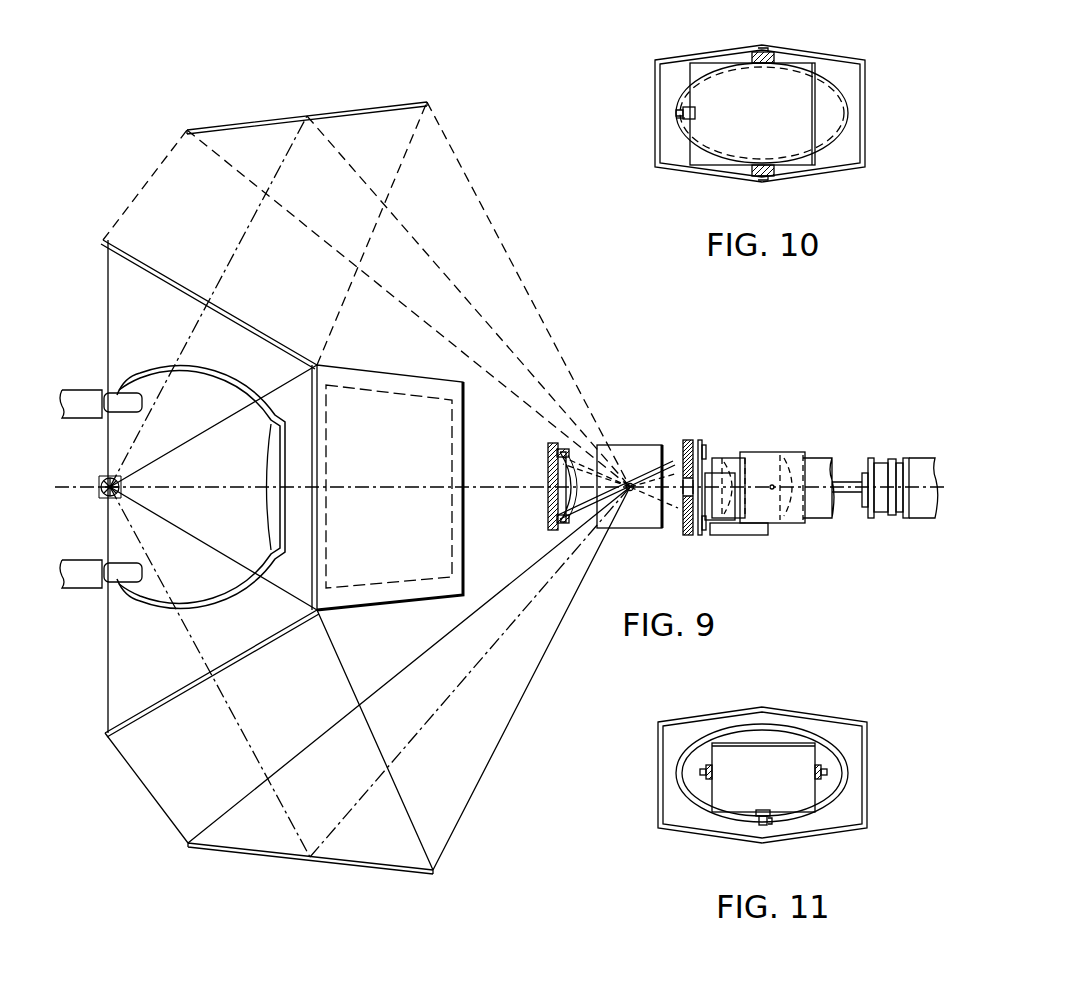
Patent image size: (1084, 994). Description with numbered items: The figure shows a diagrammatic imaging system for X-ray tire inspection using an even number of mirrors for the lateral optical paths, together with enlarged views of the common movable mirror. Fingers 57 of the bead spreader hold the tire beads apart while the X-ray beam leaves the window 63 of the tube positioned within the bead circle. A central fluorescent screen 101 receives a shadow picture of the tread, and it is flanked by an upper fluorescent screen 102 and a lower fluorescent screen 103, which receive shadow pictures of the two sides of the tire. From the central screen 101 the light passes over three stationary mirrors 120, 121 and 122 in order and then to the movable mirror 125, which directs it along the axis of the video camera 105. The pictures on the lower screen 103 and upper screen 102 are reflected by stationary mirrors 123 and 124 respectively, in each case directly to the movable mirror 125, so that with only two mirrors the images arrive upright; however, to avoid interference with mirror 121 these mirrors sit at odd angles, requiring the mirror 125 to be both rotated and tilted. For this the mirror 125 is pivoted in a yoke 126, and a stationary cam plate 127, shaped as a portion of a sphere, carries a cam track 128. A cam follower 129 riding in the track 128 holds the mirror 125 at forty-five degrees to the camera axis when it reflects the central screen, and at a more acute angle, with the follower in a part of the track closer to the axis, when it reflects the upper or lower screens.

In FIG. 9, the fingers 57 is at (118, 405).
In FIG. 9, the window 63 is at (105, 498).
In FIG. 9, the central fluorescent screen 101 is at (322, 398).
In FIG. 9, the upper fluorescent screen 102 is at (128, 250).
In FIG. 9, the lower fluorescent screen 103 is at (130, 733).
In FIG. 9, the video camera 105 is at (925, 462).
In FIG. 9, the stationary mirror 120 is at (463, 535).
In FIG. 9, the stationary mirror 121 is at (365, 590).
In FIG. 9, the stationary mirror 122 is at (640, 525).
In FIG. 9, the stationary mirror 123 is at (235, 856).
In FIG. 9, the stationary mirror 124 is at (355, 104).
In FIG. 9, the movable mirror 125 is at (630, 480).
In FIG. 10, the movable mirror 125 is at (700, 65).
In FIG. 11, the movable mirror 125 is at (790, 755).
In FIG. 10, the yoke 126 is at (772, 52).
In FIG. 11, the yoke 126 is at (708, 765).
In FIG. 9, the stationary cam plate 127 is at (548, 470).
In FIG. 10, the stationary cam plate 127 is at (850, 75).
In FIG. 11, the stationary cam plate 127 is at (848, 740).
In FIG. 10, the cam track 128 is at (678, 110).
In FIG. 11, the cam track 128 is at (733, 822).
In FIG. 9, the cam follower 129 is at (563, 530).
In FIG. 10, the cam follower 129 is at (680, 120).
In FIG. 11, the cam follower 129 is at (772, 822).